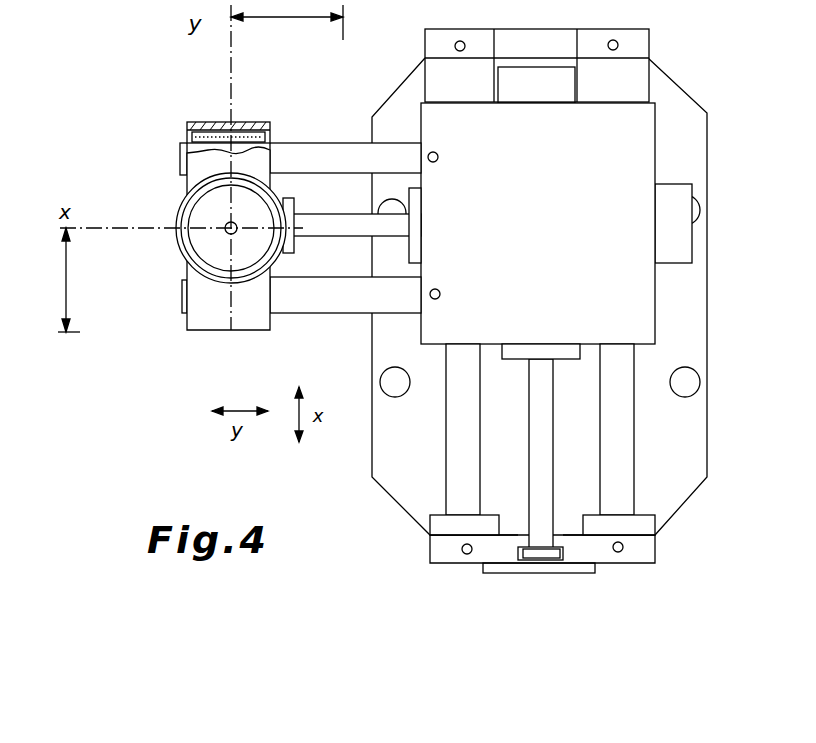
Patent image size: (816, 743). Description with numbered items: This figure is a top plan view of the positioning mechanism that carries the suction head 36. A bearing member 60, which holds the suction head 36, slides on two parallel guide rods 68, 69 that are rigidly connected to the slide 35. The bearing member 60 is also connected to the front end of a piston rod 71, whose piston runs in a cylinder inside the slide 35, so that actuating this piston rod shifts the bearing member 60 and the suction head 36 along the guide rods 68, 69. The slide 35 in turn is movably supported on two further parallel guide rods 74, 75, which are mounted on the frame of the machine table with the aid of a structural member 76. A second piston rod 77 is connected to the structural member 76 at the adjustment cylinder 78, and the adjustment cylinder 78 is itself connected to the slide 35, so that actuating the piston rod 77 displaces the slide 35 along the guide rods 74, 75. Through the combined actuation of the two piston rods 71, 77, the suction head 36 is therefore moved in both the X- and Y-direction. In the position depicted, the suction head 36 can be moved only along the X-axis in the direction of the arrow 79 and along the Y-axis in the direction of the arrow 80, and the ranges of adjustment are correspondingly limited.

The slide 35 is at (661, 125).
The suction head 36 is at (170, 204).
The bearing member 60 is at (237, 323).
The guide rod 68 is at (319, 148).
The guide rod 69 is at (328, 300).
The piston rod 71 is at (338, 233).
The guide rod 74 is at (453, 443).
The guide rod 75 is at (627, 448).
The structural member 76 is at (680, 497).
The piston rod 77 is at (537, 443).
The adjustment cylinder 78 is at (540, 352).
The arrow 79 is at (67, 282).
The arrow 80 is at (286, 21).